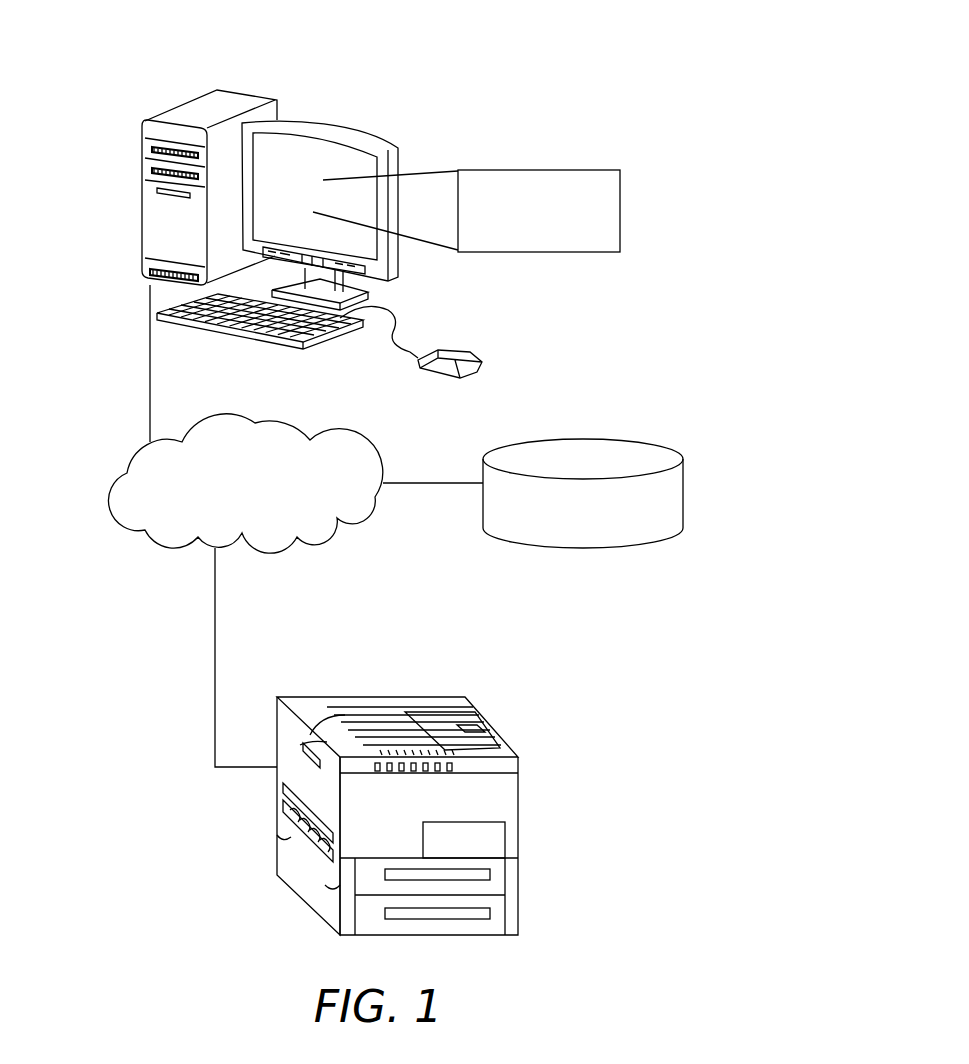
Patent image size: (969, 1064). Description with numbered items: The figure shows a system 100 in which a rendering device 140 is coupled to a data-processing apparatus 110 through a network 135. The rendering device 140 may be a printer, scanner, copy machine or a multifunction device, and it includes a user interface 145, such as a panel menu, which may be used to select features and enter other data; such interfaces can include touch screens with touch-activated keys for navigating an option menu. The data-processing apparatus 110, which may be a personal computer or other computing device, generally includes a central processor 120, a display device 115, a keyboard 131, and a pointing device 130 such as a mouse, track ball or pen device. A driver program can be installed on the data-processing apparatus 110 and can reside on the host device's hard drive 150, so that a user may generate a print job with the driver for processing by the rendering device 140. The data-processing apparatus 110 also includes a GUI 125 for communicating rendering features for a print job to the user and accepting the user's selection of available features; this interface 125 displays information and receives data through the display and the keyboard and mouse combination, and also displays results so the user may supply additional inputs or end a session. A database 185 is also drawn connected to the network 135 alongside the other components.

The system 100 is at (488, 63).
The data-processing apparatus 110 is at (342, 163).
The display device 115 is at (322, 125).
The central processor 120 is at (142, 274).
The GUI 125 is at (563, 170).
The pointing device 130 is at (457, 355).
The keyboard 131 is at (230, 327).
The network 135 is at (280, 421).
The rendering device 140 is at (415, 697).
The user interface 145 is at (447, 748).
The hard drive 150 is at (175, 102).
The database 185 is at (626, 438).